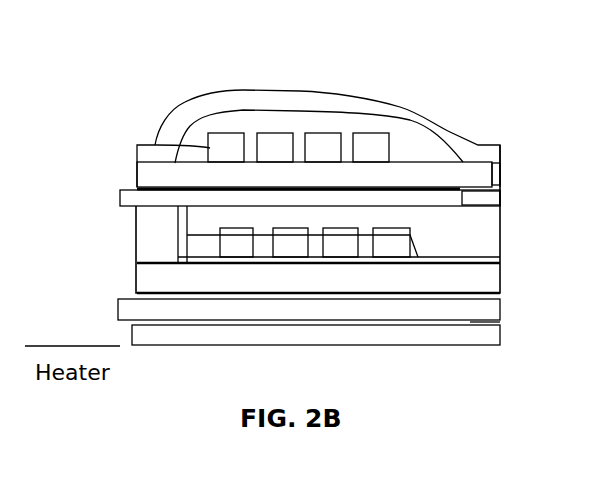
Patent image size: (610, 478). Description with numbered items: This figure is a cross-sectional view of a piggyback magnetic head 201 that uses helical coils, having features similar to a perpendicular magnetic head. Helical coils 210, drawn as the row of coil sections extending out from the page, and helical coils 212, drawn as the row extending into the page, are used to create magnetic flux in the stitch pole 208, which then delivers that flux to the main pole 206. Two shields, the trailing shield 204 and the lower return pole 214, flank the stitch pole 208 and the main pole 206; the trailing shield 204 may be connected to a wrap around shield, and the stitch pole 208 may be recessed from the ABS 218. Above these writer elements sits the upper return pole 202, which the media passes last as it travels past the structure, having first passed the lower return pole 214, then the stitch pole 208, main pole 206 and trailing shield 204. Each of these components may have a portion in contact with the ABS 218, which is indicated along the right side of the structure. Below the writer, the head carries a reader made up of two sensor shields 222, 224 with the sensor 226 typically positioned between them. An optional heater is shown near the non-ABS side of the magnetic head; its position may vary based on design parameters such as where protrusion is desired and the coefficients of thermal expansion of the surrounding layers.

The piggyback magnetic head 201 is at (200, 72).
The upper return pole 202 is at (440, 124).
The trailing shield 204 is at (503, 177).
The main pole 206 is at (500, 194).
The stitch pole 208 is at (453, 207).
The helical coils 210 is at (155, 145).
The helical coils 212 is at (220, 228).
The lower return pole 214 is at (350, 288).
The ABS 218 is at (500, 268).
The sensor shield 222 is at (118, 307).
The sensor shield 224 is at (132, 333).
The sensor 226 is at (493, 321).